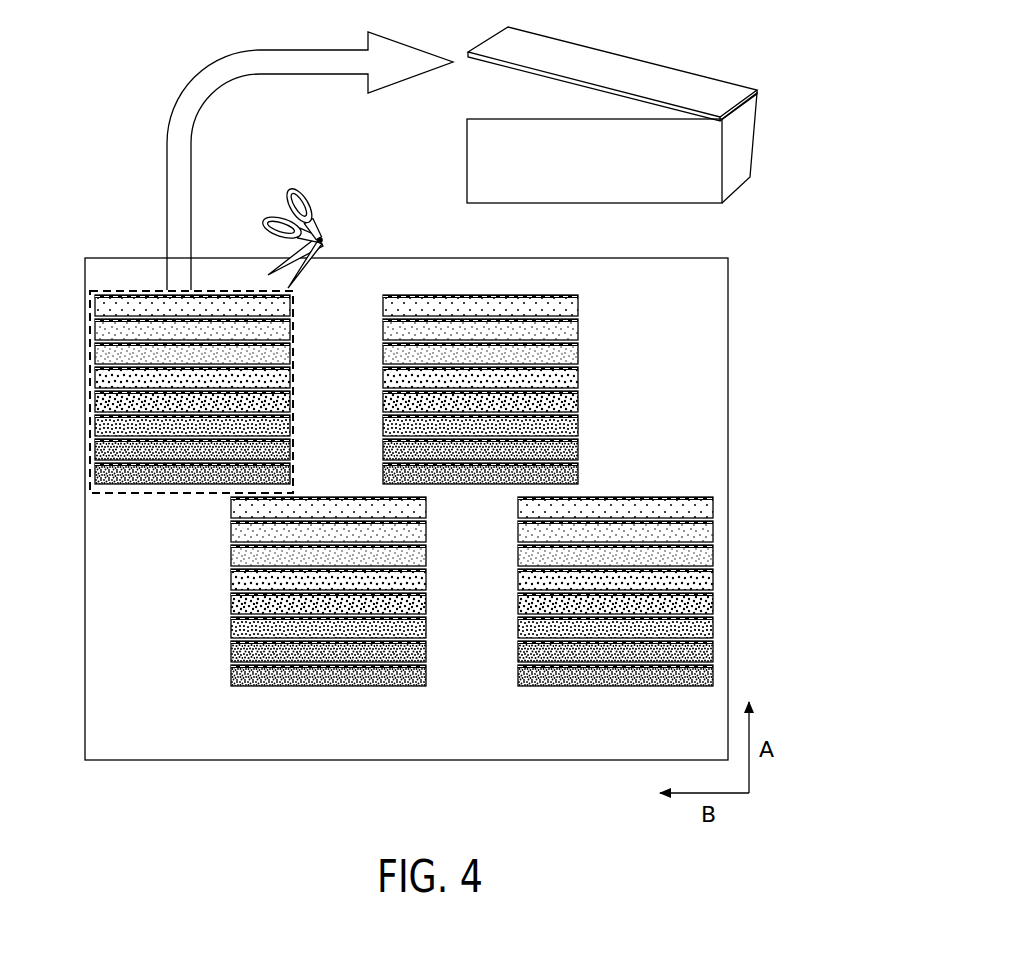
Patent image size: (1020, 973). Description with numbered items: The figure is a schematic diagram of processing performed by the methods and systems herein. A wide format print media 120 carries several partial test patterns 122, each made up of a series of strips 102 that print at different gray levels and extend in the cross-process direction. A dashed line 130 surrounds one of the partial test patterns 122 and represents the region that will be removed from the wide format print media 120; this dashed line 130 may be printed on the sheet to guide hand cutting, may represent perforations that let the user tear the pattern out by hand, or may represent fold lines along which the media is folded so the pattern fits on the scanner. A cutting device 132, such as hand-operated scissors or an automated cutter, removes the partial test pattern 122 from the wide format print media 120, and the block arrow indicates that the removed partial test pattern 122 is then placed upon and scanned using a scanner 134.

The strips 102 is at (696, 533).
The wide format print media 120 is at (219, 763).
The partial test patterns 122 is at (432, 448).
The dashed line 130 is at (142, 289).
The cutting device 132 is at (381, 190).
The scanner 134 is at (701, 99).